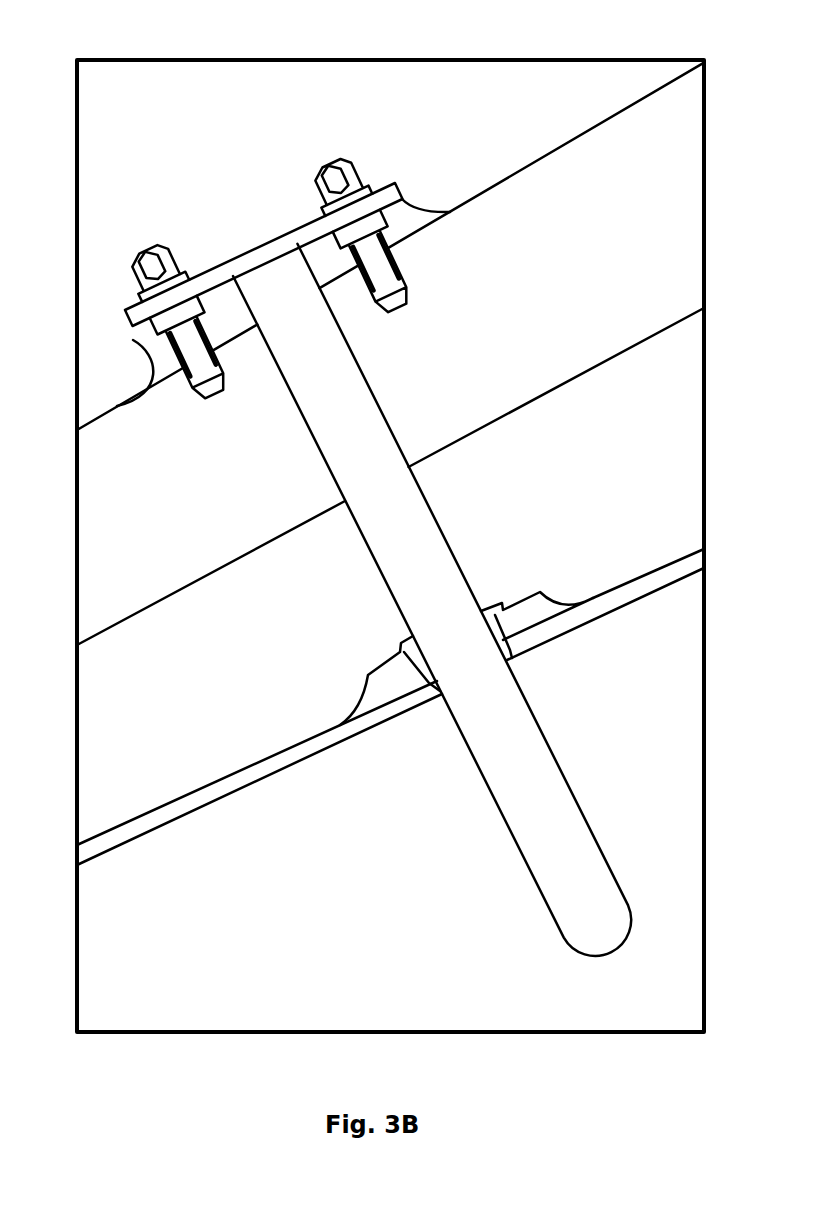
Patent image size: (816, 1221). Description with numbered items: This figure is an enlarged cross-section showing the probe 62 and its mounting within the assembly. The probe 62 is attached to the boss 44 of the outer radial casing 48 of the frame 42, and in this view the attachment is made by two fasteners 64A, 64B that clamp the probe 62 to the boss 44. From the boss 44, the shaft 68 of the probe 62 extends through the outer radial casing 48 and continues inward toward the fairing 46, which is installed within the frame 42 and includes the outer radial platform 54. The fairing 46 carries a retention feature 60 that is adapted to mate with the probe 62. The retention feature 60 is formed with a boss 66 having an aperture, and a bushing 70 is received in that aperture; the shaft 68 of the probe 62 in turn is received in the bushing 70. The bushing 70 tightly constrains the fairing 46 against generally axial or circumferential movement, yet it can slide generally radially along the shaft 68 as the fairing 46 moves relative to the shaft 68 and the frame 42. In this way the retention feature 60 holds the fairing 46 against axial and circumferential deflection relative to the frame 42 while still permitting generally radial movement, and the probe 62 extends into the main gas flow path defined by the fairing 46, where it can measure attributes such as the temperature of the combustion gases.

The frame 42 is at (555, 94).
The boss 44 is at (447, 184).
The fairing 46 is at (657, 530).
The outer radial casing 48 is at (573, 279).
The outer radial platform 54 is at (95, 850).
The retention feature 60 is at (333, 697).
The probe 62 is at (216, 219).
The fastener 64A is at (133, 282).
The fastener 64B is at (363, 173).
The boss 66 is at (283, 234).
The shaft 68 is at (436, 512).
The bushing 70 is at (497, 600).